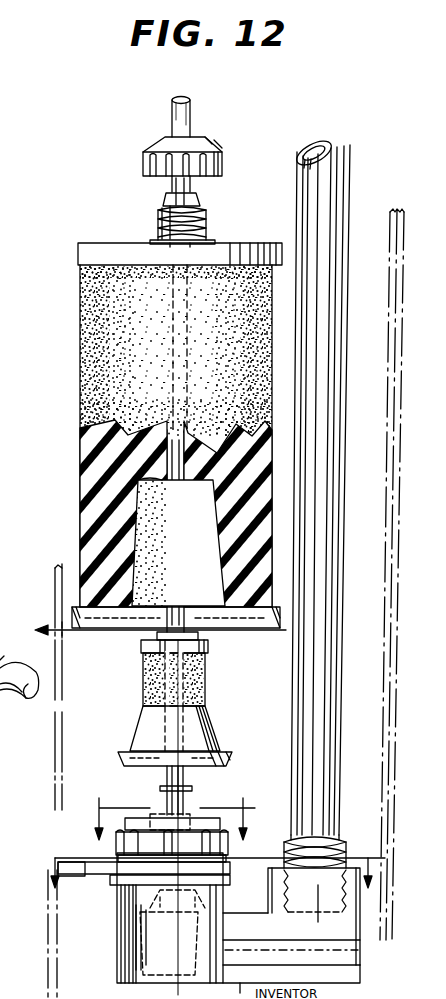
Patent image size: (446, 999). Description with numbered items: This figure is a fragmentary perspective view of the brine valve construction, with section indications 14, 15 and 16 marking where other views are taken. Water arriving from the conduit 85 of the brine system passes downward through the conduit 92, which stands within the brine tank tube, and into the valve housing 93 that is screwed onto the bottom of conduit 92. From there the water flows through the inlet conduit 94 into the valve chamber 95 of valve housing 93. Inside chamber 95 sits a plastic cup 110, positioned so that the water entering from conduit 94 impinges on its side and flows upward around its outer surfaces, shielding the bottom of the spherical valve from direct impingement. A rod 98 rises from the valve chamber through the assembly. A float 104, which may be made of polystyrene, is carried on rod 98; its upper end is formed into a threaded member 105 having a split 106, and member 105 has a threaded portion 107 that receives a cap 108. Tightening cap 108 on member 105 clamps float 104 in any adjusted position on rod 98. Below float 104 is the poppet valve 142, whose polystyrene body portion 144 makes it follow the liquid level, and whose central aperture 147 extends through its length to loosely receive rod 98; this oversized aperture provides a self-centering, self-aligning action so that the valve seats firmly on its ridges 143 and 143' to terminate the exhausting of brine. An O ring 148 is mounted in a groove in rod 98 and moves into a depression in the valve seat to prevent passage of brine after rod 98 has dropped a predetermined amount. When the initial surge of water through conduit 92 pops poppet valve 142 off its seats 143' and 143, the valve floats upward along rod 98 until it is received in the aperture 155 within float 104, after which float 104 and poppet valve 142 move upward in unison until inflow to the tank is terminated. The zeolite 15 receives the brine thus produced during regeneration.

The conduit 92 is at (340, 196).
The rod 98 is at (192, 137).
The cap 108 is at (218, 150).
The split 106 is at (182, 200).
The threaded member 105 is at (206, 226).
The threaded portion 107 is at (156, 224).
The float 104 is at (80, 378).
The aperture 155 is at (215, 622).
The central aperture 147 is at (140, 670).
The polystyrene body portion 144 is at (205, 690).
The poppet valve 142 is at (215, 730).
The O ring 148 is at (186, 790).
The ridge 143' is at (147, 799).
The valve seat 143 is at (195, 825).
The valve chamber 95 is at (122, 935).
The cup 110 is at (136, 953).
The valve housing 93 is at (240, 985).
The conduit 94 is at (340, 968).
The conduit 85 is at (22, 695).
The section line 14 is at (149, 687).
The zeolite 15 is at (214, 919).
The section line 16 is at (172, 829).